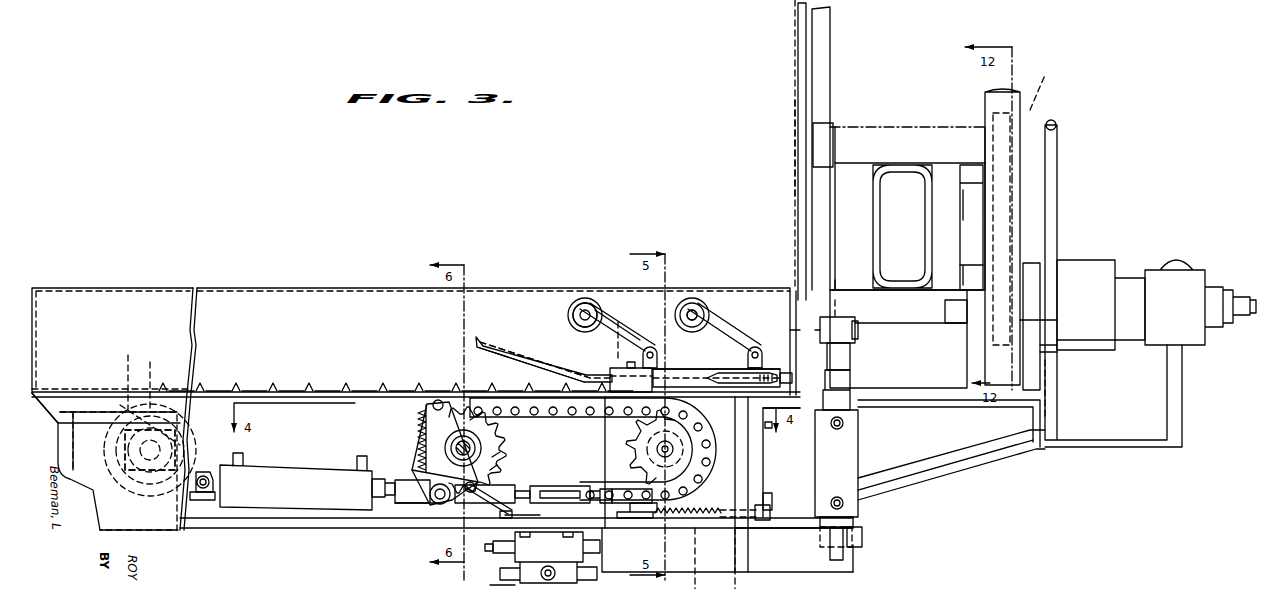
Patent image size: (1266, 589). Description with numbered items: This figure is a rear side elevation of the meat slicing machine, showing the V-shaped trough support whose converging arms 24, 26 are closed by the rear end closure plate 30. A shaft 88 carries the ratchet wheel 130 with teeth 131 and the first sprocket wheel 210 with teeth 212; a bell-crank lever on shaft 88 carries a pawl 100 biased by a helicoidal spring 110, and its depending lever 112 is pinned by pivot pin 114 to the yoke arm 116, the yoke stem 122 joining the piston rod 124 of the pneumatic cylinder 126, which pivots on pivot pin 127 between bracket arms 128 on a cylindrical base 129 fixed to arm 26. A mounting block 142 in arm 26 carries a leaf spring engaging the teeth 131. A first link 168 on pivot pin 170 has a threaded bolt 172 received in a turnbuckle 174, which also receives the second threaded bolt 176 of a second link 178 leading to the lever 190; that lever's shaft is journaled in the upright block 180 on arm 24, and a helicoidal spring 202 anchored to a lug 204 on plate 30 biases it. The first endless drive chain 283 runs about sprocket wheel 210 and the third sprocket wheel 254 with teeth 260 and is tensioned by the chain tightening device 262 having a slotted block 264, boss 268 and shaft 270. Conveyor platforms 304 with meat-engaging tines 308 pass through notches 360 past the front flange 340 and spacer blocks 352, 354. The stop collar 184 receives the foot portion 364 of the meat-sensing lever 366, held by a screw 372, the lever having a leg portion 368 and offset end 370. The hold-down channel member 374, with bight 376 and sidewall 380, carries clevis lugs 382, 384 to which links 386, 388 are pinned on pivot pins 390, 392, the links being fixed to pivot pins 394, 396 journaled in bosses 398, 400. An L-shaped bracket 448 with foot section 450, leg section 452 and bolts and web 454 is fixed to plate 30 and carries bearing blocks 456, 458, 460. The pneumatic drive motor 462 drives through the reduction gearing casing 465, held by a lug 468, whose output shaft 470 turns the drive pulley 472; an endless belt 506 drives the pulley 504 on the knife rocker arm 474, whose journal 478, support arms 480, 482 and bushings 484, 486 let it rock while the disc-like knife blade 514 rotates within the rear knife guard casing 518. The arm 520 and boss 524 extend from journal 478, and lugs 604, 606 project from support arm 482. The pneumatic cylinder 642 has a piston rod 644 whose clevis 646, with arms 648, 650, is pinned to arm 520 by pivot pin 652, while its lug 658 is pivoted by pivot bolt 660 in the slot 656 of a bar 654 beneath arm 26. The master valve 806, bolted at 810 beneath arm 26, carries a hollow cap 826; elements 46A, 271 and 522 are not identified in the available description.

The trough support arm 24 is at (335, 430).
The trough support arm 26 is at (310, 528).
The rear end closure plate 30 is at (735, 445).
The motor housing 46A is at (1113, 264).
The shaft 88 is at (455, 446).
The pawl 100 is at (428, 408).
The helicoidal spring 110 is at (415, 430).
The depending lever 112 is at (445, 489).
The pivot pin 114 is at (437, 500).
The yoke arm 116 is at (405, 505).
The stem 122 is at (402, 480).
The piston rod 124 is at (385, 478).
The pneumatically-operable cylinder 126 is at (292, 460).
The pivot pin 127 is at (203, 490).
The bracket arm 128 is at (196, 470).
The cylindrical base 129 is at (216, 500).
The ratchet wheel 130 is at (505, 444).
The ratchet teeth 131 is at (503, 455).
The mounting block 142 is at (530, 511).
The first link 168 is at (500, 487).
The pivot pin 170 is at (480, 500).
The threaded bolt 172 is at (523, 490).
The turnbuckle 174 is at (556, 485).
The second threaded bolt 176 is at (598, 488).
The second link 178 is at (625, 488).
The upright block 180 is at (605, 421).
The stop collar 184 is at (605, 368).
The lever 190 is at (626, 520).
The helicoidal spring 202 is at (695, 510).
The lug 204 is at (730, 508).
The first sprocket wheel 210 is at (500, 464).
The sprocket teeth 212 is at (495, 433).
The third sprocket wheel 254 is at (668, 455).
The sprocket teeth 260 is at (620, 445).
The chain tightening device 262 is at (147, 457).
The block 264 is at (150, 470).
The boss 268 is at (127, 375).
The shaft 270 is at (155, 377).
The guide line 271 is at (186, 415).
The first endless drive chain 283 is at (500, 405).
The conveyor platform 304 is at (386, 388).
The tines 308 is at (352, 380).
The front flange 340 is at (52, 408).
The spacer block 352 is at (78, 390).
The spacer block 354 is at (727, 373).
The notches 360 is at (104, 395).
The foot portion 364 is at (630, 336).
The meat-sensing lever 366 is at (685, 370).
The leg portion 368 is at (700, 368).
The laterally-offset end 370 is at (792, 381).
The screw 372 is at (633, 360).
The channel member 374 is at (480, 340).
The bight 376 is at (528, 355).
The meat-engaging sidewall 380 is at (500, 345).
The clevis-type lug 382 is at (657, 358).
The clevis-type lug 384 is at (764, 358).
The link 386 is at (617, 322).
The link 388 is at (717, 328).
The pivot pin 390 is at (635, 333).
The pivot pin 392 is at (758, 350).
The pivot pin 394 is at (592, 302).
The pivot pin 396 is at (685, 298).
The boss 398 is at (583, 298).
The boss 400 is at (705, 300).
The L-shaped bracket 448 is at (903, 471).
The foot section 450 is at (765, 462).
The leg section 452 is at (932, 408).
The bolts 454 is at (772, 427).
The bearing block 456 is at (1040, 262).
The bearing block 458 is at (962, 357).
The bearing block 460 is at (852, 345).
The pneumatic drive motor 462 is at (1206, 280).
The reduction gearing casing 465 is at (1100, 340).
The lug 468 is at (1055, 375).
The output shaft 470 is at (1045, 322).
The drive pulley 472 is at (1002, 237).
The knife rocker arm 474 is at (930, 105).
The journal 478 is at (898, 292).
The support arm 480 is at (870, 238).
The support arm 482 is at (928, 237).
The bushing 484 is at (838, 288).
The bushing 486 is at (950, 302).
The pulley 504 is at (1050, 108).
The endless pulley belt 506 is at (1050, 188).
The knife blade 514 is at (815, 60).
The rear knife guard casing 518 is at (830, 80).
The arm 520 is at (850, 305).
The plate 522 is at (795, 150).
The boss 524 is at (834, 125).
The lug 604 is at (971, 227).
The lug 606 is at (971, 261).
The pneumatic cylinder 642 is at (858, 469).
The piston rod 644 is at (852, 378).
The clevis 646 is at (860, 338).
The clevis arm 648 is at (788, 328).
The clevis arm 650 is at (858, 324).
The pivot pin 652 is at (855, 326).
The bar 654 is at (852, 568).
The slot 656 is at (863, 545).
The lug 658 is at (815, 532).
The pivot bolt 660 is at (855, 527).
The master valve 806 is at (560, 555).
The bolts 810 is at (512, 546).
The cap 826 is at (492, 585).